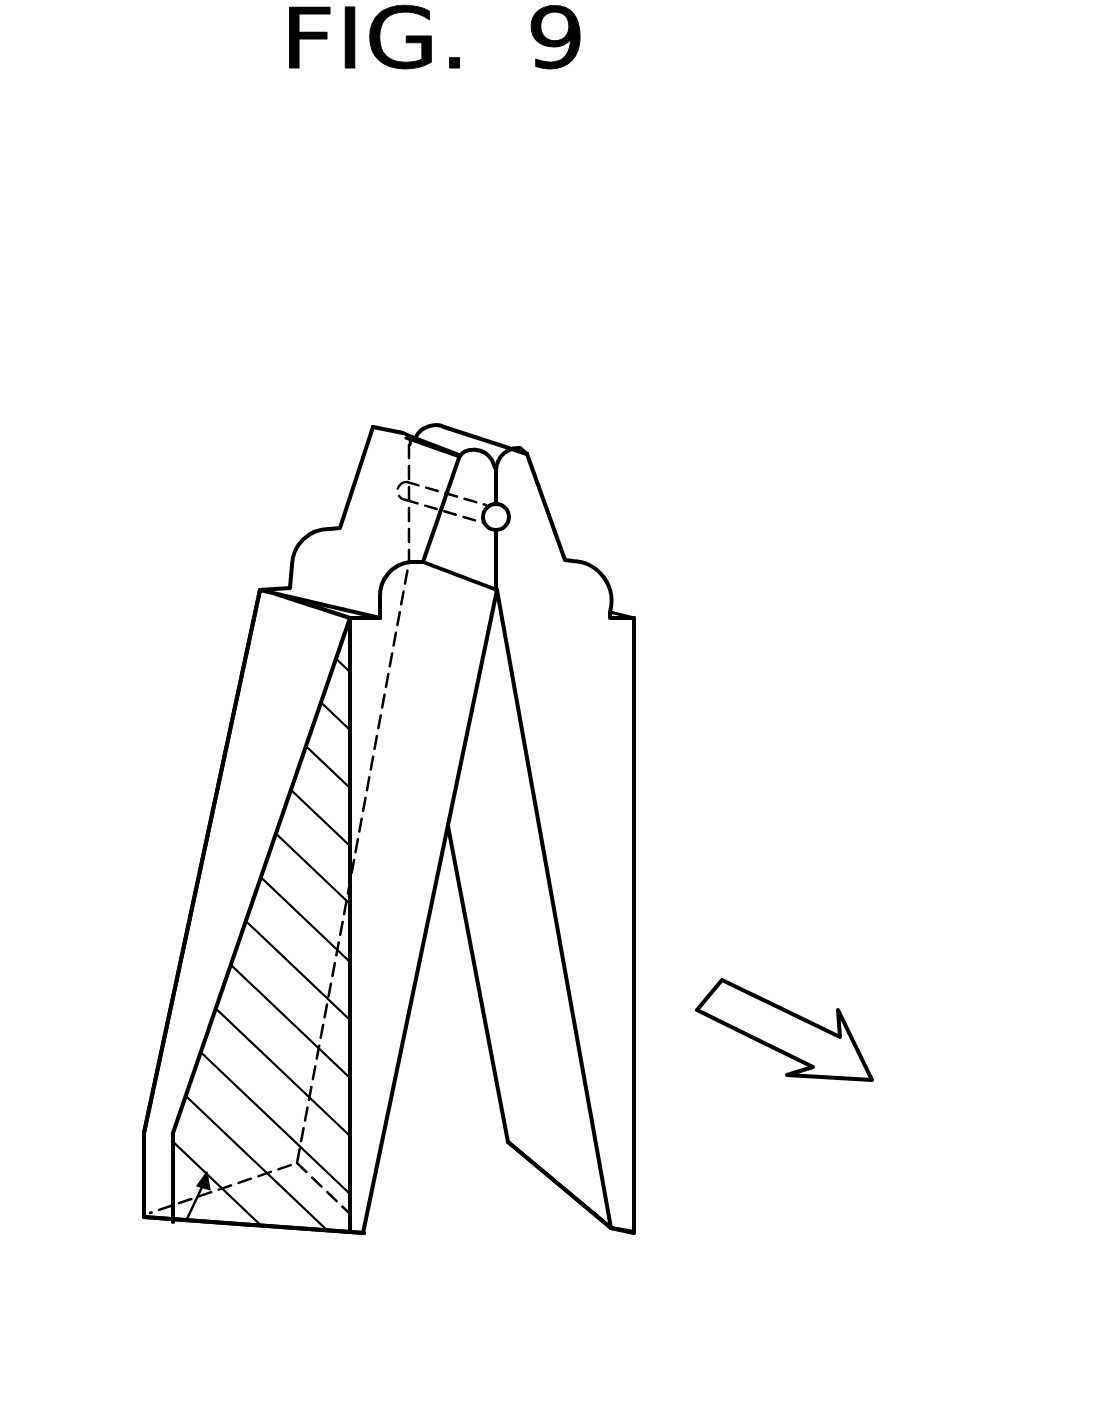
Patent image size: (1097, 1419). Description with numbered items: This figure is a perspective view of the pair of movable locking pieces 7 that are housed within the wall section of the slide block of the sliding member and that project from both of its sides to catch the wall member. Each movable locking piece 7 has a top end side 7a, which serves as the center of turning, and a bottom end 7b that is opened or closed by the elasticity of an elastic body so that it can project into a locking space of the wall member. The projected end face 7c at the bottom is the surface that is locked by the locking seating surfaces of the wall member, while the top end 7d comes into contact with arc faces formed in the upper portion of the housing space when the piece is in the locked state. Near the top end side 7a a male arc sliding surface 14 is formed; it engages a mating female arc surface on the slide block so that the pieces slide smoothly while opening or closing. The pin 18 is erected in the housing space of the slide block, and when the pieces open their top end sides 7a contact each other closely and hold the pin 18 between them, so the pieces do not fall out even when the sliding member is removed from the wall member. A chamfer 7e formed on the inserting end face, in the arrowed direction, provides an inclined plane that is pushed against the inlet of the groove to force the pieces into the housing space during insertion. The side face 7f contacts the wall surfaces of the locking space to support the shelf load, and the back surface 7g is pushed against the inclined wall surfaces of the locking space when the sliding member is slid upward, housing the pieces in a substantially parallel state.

The movable locking piece 7 is at (683, 395).
The top end side 7a is at (552, 450).
The bottom end 7b is at (257, 1230).
The projected end face 7c is at (360, 1236).
The top end 7d is at (422, 428).
The chamfer 7e is at (176, 1224).
The side face 7f is at (212, 792).
The back surface 7g is at (273, 698).
The male arc sliding surface 14 is at (330, 568).
The pin 18 is at (510, 518).